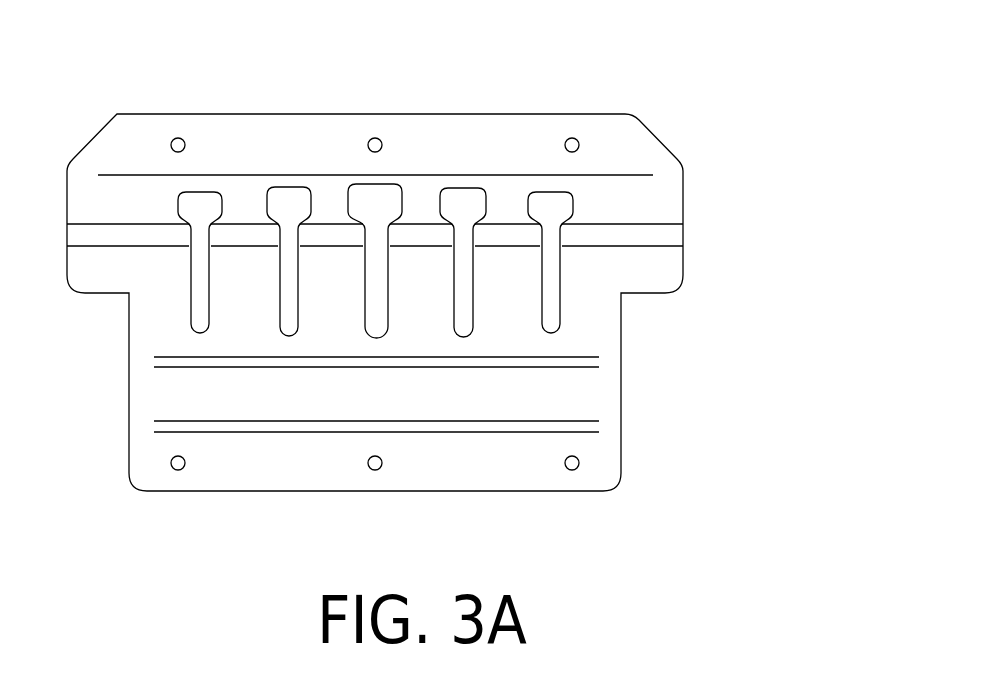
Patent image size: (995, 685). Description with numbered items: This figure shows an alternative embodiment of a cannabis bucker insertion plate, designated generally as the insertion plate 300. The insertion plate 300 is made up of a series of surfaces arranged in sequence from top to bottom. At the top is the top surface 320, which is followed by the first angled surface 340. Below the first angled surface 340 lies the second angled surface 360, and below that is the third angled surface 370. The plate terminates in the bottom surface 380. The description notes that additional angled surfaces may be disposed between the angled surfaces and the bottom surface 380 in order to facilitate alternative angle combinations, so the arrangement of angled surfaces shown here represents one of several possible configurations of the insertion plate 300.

The insertion plate 300 is at (603, 48).
The top surface 320 is at (615, 150).
The first angled surface 340 is at (648, 207).
The second angled surface 360 is at (608, 283).
The third angled surface 370 is at (603, 393).
The bottom surface 380 is at (623, 468).